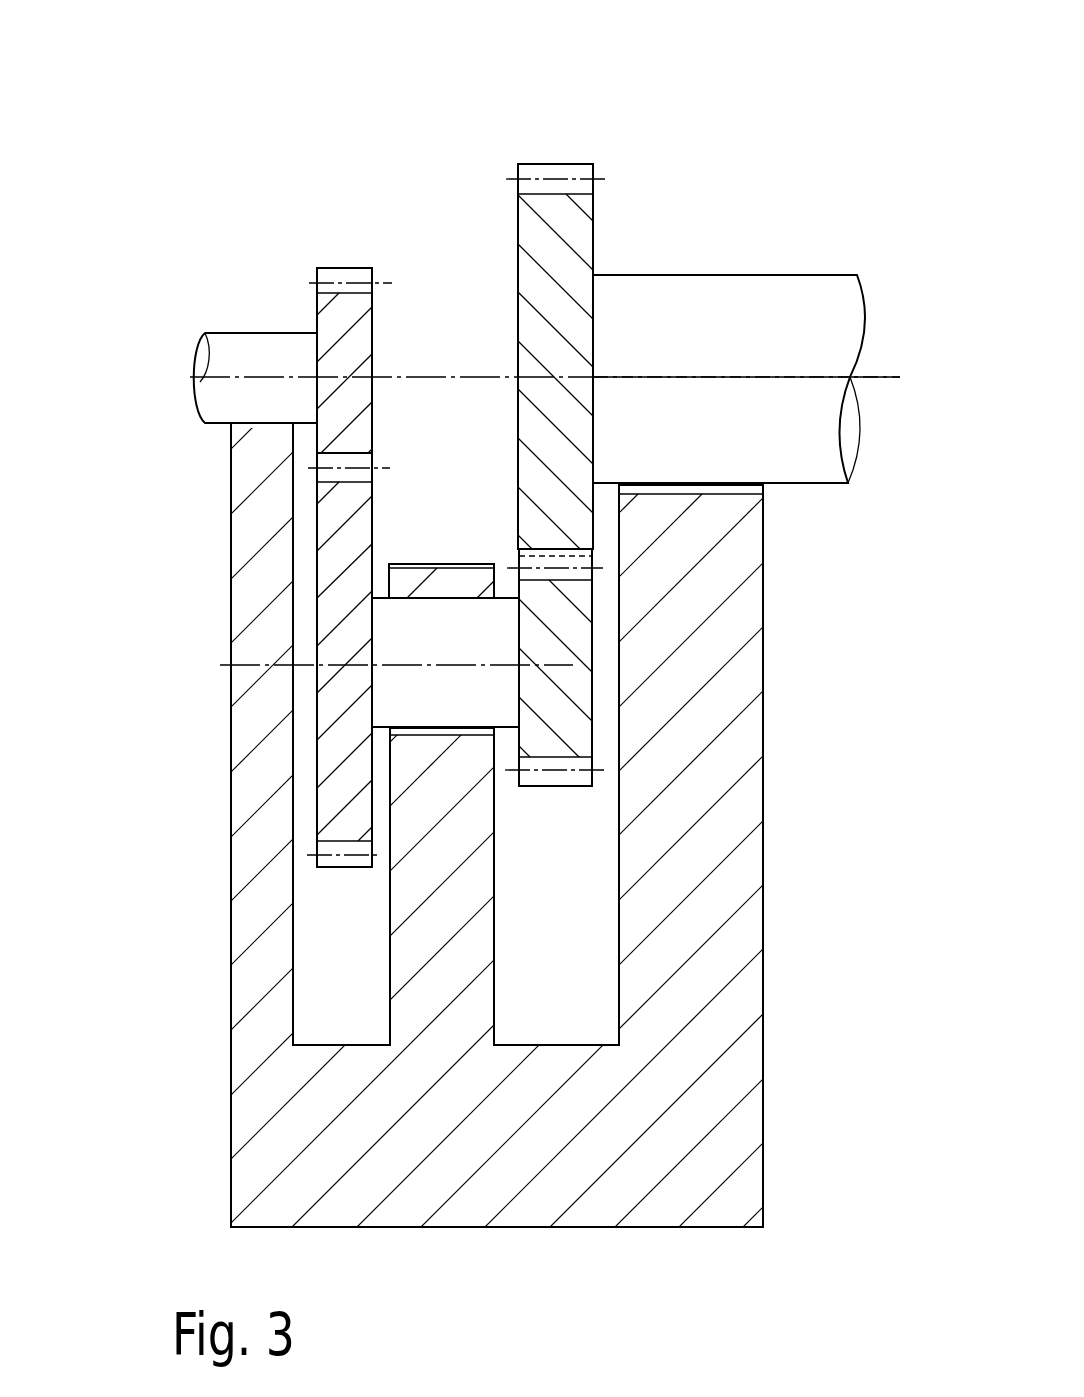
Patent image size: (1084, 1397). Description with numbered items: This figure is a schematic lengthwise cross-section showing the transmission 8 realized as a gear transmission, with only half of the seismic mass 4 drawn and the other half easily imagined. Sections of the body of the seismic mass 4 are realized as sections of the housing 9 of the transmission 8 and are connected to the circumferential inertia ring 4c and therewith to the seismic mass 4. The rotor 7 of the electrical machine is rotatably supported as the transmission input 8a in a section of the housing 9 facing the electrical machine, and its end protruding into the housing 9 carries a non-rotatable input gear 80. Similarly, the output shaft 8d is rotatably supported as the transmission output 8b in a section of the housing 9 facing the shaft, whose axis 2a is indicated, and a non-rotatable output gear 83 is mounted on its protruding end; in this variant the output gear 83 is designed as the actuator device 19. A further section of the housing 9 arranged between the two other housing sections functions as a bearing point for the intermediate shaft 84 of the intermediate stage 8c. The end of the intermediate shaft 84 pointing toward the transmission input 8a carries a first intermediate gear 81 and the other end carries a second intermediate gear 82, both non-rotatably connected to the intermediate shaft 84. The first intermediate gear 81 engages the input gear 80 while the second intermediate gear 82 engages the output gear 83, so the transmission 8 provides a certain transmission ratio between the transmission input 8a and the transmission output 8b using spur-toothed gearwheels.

The axis of rotation 2a is at (878, 377).
The seismic mass 4 is at (665, 1227).
The circumferential inertia ring 4c is at (530, 1200).
The rotor 7 is at (225, 333).
The transmission 8 is at (448, 105).
The transmission input 8a is at (283, 215).
The transmission output 8b is at (708, 222).
The intermediate stage 8c is at (182, 688).
The output shaft 8d is at (792, 283).
The housing 9 is at (420, 939).
The actuator device 19 is at (598, 145).
The input gear 80 is at (363, 325).
The first intermediate gear 81 is at (362, 500).
The second intermediate gear 82 is at (543, 549).
The output gear 83 is at (533, 238).
The intermediate shaft 84 is at (427, 617).